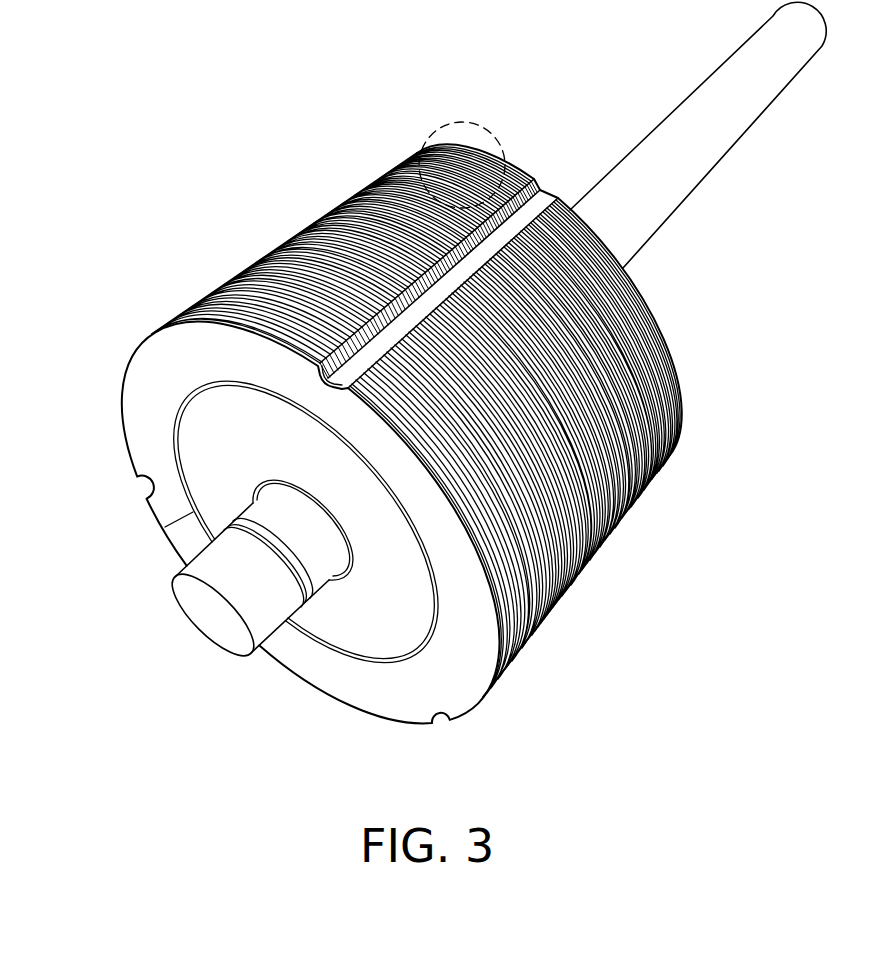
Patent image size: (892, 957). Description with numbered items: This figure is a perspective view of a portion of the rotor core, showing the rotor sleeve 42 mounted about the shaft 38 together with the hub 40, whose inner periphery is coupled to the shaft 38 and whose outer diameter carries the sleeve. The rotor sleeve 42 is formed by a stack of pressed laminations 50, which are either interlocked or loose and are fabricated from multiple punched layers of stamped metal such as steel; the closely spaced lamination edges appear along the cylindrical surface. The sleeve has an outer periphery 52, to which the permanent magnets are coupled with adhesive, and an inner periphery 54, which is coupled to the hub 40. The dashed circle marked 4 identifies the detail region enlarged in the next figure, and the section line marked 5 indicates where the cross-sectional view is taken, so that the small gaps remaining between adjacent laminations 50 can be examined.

The detail region of FIG. 4 is at (465, 122).
The section line 5- 5 is at (217, 187).
The shaft 38 is at (730, 61).
The hub 40 is at (347, 615).
The rotor sleeve 42 is at (102, 386).
The laminations 50 is at (217, 293).
The outer periphery 52 is at (126, 433).
The inner periphery 54 is at (167, 527).